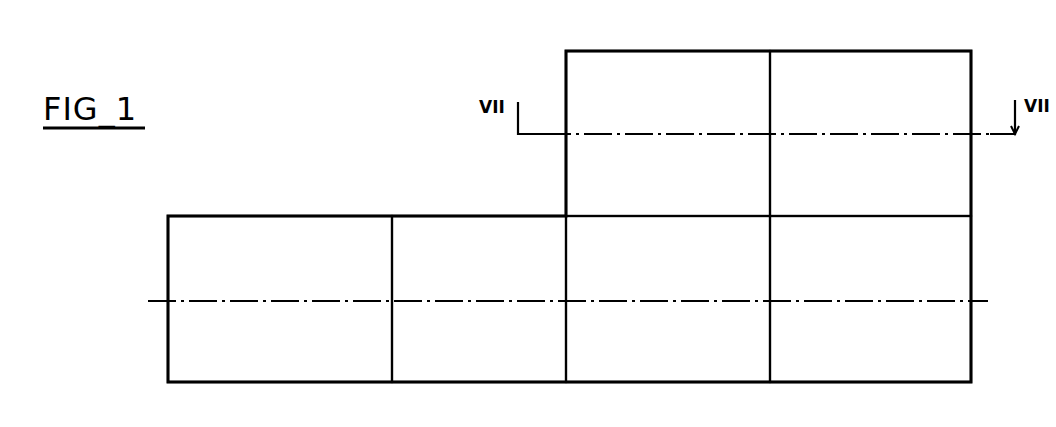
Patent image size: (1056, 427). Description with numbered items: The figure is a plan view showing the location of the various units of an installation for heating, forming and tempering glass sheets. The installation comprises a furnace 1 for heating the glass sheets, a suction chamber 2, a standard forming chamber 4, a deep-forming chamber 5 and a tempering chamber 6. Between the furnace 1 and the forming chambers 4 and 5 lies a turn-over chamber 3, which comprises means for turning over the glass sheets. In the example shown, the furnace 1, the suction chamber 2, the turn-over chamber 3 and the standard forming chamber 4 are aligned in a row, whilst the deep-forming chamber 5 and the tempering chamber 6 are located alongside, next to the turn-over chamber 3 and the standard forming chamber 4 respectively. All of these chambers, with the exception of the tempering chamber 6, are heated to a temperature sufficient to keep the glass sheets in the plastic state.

The furnace 1 is at (265, 349).
The suction chamber 2 is at (465, 350).
The turn-over chamber 3 is at (653, 350).
The standard forming chamber 4 is at (858, 353).
The deep-forming chamber 5 is at (592, 166).
The tempering chamber 6 is at (941, 88).